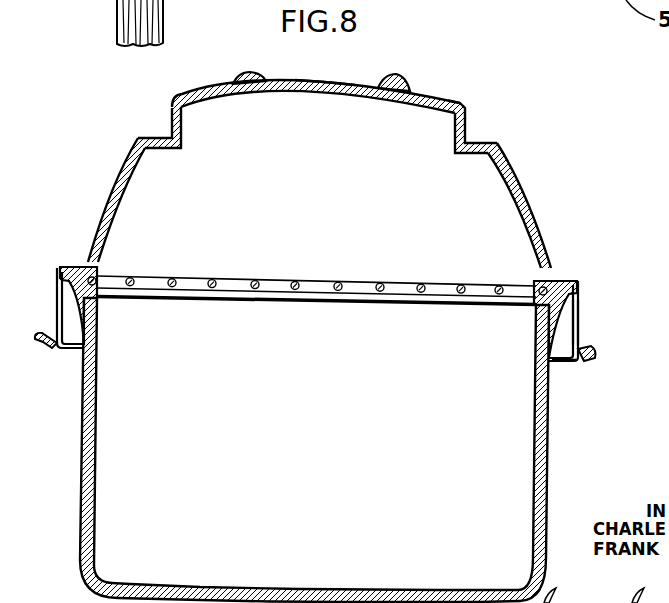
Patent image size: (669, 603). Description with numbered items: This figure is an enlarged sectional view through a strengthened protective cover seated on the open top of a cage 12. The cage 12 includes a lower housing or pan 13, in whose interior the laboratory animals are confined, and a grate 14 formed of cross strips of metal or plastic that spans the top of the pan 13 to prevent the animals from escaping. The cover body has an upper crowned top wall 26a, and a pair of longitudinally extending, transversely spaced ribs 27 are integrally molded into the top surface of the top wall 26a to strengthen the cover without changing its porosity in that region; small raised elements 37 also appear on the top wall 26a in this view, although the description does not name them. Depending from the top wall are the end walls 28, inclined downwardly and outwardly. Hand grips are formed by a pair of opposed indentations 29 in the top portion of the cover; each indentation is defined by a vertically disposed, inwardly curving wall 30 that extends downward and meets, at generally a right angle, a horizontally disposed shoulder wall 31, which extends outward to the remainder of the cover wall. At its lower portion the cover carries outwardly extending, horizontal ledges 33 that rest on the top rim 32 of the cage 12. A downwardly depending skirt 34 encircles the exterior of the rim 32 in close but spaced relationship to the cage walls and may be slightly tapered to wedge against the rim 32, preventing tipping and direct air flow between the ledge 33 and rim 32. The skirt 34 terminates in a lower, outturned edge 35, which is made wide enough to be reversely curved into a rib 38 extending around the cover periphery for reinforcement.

The cage 12 is at (374, 450).
The lower housing or pan 13 is at (315, 450).
The grate 14 is at (296, 276).
The top wall 26a is at (326, 80).
The ribs 27 is at (319, 197).
The end walls 28 is at (333, 159).
The indentations 29 is at (151, 123).
The inwardly curving walls 30 is at (464, 113).
The shoulder walls 31 is at (478, 153).
The top rim 32 is at (62, 278).
The ledges 33 is at (78, 267).
The skirt 34 is at (579, 323).
The outturned edge 35 is at (600, 363).
The fin 37 is at (250, 75).
The rib 38 is at (43, 339).